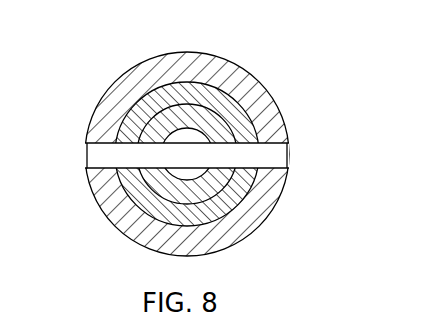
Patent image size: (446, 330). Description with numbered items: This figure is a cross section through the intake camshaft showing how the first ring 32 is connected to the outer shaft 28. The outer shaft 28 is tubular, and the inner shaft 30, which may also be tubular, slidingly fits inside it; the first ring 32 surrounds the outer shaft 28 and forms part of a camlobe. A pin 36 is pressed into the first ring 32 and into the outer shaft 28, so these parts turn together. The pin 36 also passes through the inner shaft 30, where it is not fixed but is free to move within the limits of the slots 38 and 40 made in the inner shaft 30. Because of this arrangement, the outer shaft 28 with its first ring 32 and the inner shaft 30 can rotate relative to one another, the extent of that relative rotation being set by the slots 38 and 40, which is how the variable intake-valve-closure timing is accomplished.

The outer shaft 28 is at (194, 152).
The inner shaft 30 is at (217, 93).
The first ring 32 is at (138, 85).
The pin 36 is at (285, 168).
The slot 38 is at (150, 127).
The slot 40 is at (212, 180).